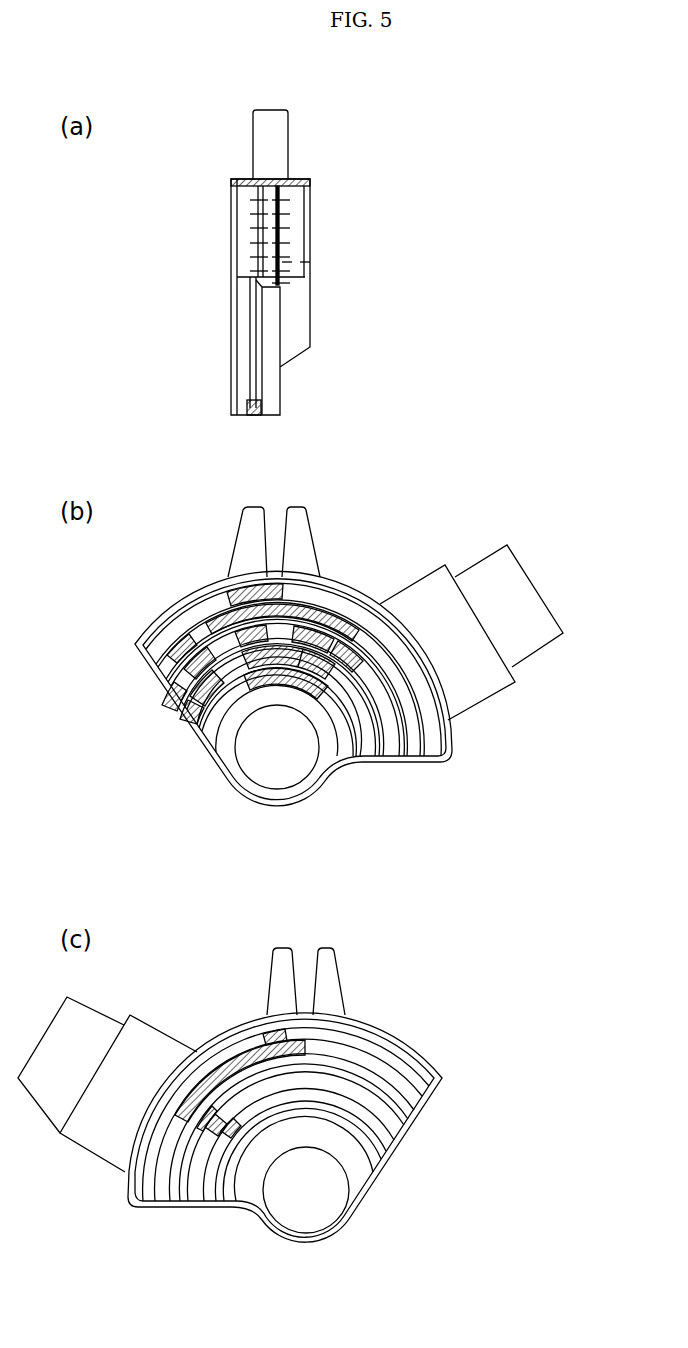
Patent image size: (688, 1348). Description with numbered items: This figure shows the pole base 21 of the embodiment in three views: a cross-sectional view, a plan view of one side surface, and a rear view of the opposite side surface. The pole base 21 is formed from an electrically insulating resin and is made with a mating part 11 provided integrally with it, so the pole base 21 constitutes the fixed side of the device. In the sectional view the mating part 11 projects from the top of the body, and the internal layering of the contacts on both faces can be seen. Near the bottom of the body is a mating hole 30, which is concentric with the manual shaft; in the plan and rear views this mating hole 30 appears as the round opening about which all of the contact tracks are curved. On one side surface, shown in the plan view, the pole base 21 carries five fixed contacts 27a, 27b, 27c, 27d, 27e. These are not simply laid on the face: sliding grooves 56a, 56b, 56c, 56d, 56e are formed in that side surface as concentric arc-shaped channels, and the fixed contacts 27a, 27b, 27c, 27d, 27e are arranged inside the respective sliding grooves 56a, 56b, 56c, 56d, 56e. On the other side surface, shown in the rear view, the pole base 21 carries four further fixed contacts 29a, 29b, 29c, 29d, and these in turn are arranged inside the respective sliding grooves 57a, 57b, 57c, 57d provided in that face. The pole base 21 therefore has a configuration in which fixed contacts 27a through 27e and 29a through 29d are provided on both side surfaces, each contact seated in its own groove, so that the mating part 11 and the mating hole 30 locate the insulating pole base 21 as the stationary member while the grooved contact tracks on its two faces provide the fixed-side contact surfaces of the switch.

The mating part 11 is at (252, 134).
The pole base 21 is at (312, 172).
The fixed contact 27a is at (292, 190).
The fixed contact 27b is at (291, 215).
The fixed contact 27c is at (291, 243).
The fixed contact 27d is at (291, 271).
The fixed contact 27e is at (287, 272).
The sliding groove 56a is at (292, 203).
The sliding groove 56b is at (291, 228).
The sliding groove 56c is at (291, 257).
The sliding groove 56d is at (291, 283).
The sliding groove 56e is at (306, 264).
The fixed contact 29a is at (258, 188).
The fixed contact 29b is at (258, 212).
The fixed contact 29c is at (258, 243).
The fixed contact 29d is at (258, 270).
The sliding groove 57a is at (262, 203).
The sliding groove 57b is at (262, 226).
The sliding groove 57c is at (262, 258).
The sliding groove 57d is at (262, 283).
The mating hole 30 is at (250, 393).